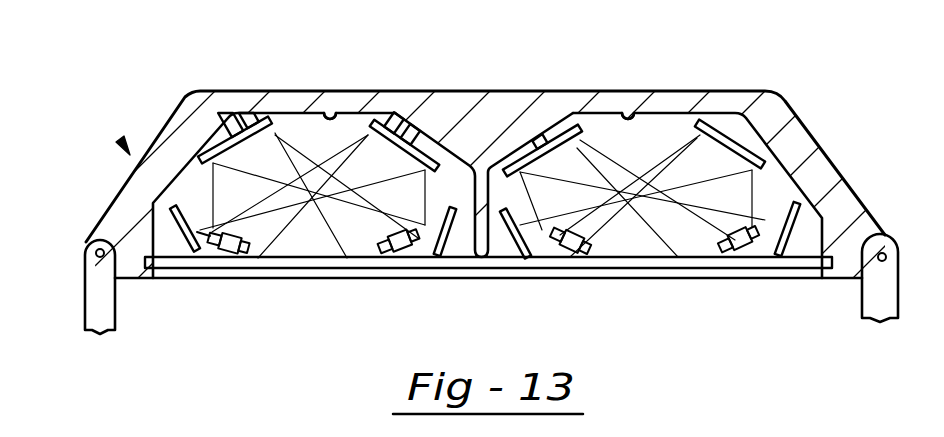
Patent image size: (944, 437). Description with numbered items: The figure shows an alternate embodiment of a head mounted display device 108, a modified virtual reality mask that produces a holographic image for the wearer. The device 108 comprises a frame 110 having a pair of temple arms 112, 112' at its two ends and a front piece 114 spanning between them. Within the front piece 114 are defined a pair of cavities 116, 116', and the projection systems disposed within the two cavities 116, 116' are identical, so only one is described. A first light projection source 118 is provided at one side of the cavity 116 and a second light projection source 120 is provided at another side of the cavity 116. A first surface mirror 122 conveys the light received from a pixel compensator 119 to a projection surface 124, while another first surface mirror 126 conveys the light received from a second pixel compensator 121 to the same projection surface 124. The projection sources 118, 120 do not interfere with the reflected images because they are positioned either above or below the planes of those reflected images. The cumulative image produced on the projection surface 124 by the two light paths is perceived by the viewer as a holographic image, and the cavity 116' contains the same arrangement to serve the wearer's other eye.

The head mounted display device 108 is at (123, 145).
The frame 110 is at (287, 100).
The temple arm 112 is at (124, 316).
The temple arm 112' is at (823, 280).
The front piece 114 is at (517, 107).
The cavity 116 is at (356, 81).
The cavity 116' is at (660, 80).
The first light projection source 118 is at (235, 256).
The pixel compensator 119 is at (186, 255).
The second light projection source 120 is at (413, 257).
The pixel compensator 121 is at (455, 255).
The first surface mirror 122 is at (393, 115).
The projection surface 124 is at (298, 268).
The first surface mirror 126 is at (241, 118).